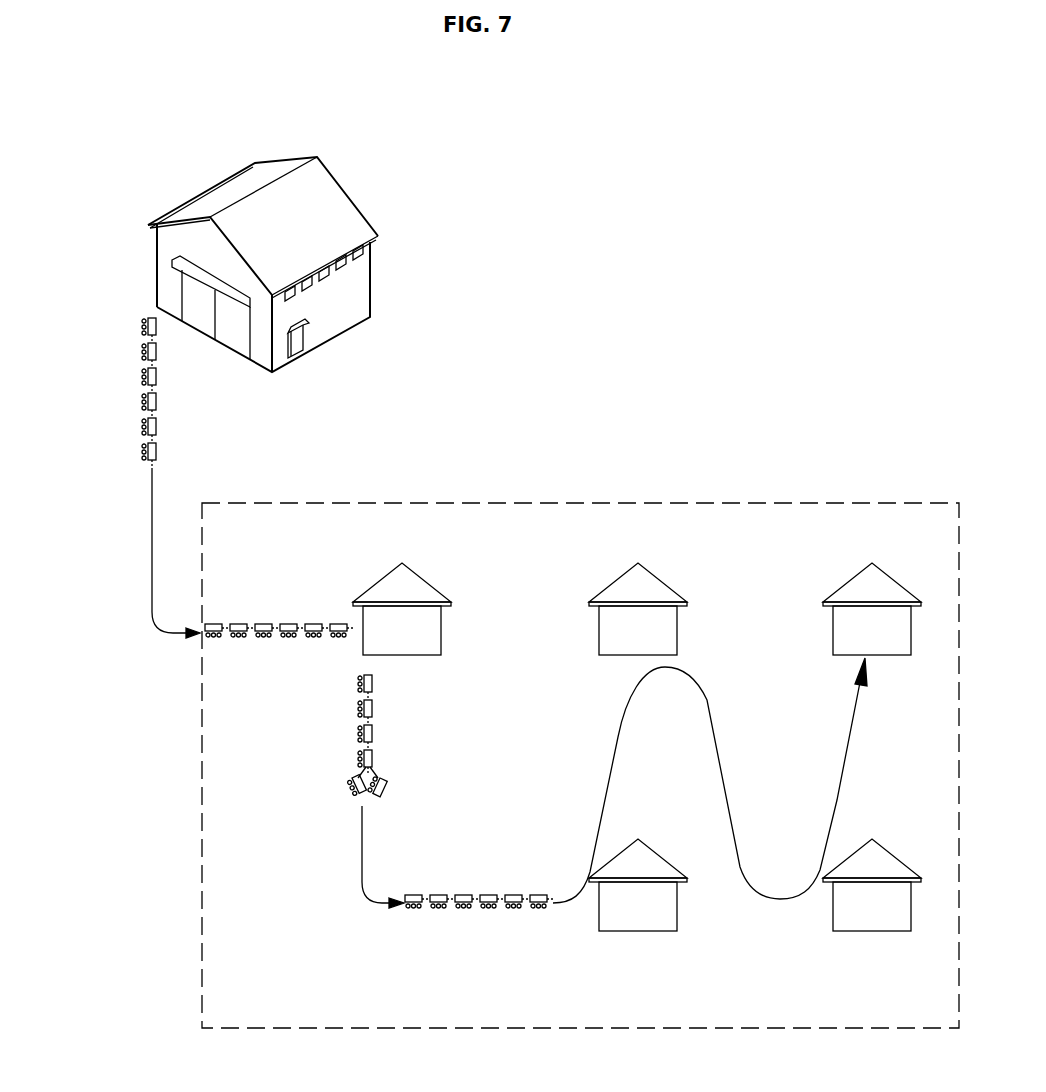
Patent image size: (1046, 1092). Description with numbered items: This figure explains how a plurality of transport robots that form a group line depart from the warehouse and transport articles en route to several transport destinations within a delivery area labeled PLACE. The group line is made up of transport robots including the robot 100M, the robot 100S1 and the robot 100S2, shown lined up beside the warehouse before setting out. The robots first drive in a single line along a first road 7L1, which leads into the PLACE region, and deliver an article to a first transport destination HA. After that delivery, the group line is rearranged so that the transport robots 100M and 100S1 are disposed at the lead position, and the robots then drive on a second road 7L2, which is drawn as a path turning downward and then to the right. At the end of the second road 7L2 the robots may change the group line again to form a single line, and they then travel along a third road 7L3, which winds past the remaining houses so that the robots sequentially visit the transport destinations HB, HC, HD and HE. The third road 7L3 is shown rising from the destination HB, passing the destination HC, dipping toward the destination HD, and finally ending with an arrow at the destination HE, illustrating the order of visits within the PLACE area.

The element warehouse is at (340, 205).
The transport robot 100M is at (143, 453).
The transport robot 100S1 is at (143, 427).
The transport robot 100S2 is at (143, 401).
The first road 7L1 is at (151, 548).
The second road 7L2 is at (361, 855).
The third road 7L3 is at (613, 745).
The delivery place PLACE is at (761, 501).
The first transport destination HA is at (436, 588).
The transport destination HB is at (655, 932).
The transport destination HC is at (672, 588).
The transport destination HD is at (888, 932).
The transport destination HE is at (906, 588).